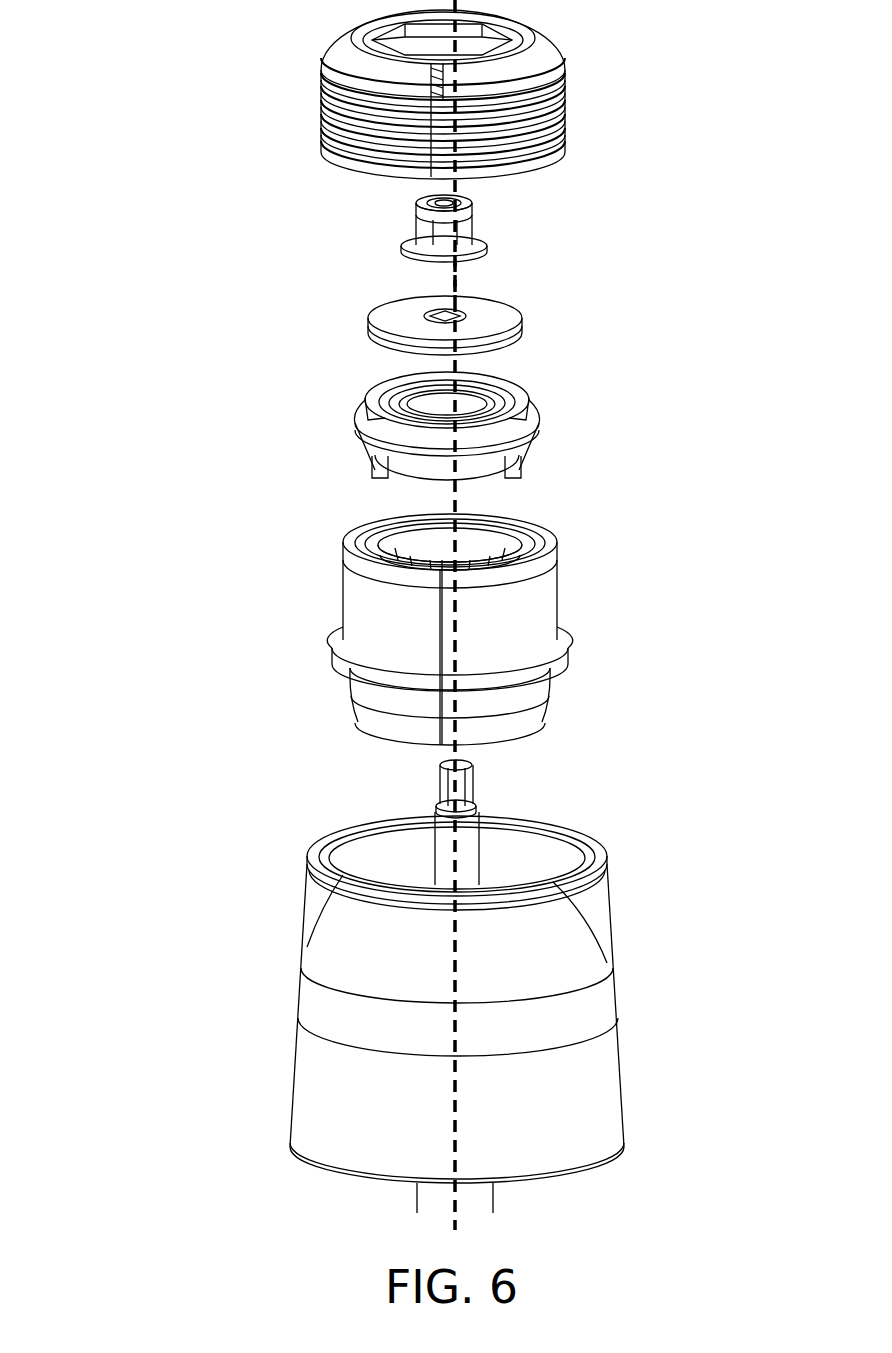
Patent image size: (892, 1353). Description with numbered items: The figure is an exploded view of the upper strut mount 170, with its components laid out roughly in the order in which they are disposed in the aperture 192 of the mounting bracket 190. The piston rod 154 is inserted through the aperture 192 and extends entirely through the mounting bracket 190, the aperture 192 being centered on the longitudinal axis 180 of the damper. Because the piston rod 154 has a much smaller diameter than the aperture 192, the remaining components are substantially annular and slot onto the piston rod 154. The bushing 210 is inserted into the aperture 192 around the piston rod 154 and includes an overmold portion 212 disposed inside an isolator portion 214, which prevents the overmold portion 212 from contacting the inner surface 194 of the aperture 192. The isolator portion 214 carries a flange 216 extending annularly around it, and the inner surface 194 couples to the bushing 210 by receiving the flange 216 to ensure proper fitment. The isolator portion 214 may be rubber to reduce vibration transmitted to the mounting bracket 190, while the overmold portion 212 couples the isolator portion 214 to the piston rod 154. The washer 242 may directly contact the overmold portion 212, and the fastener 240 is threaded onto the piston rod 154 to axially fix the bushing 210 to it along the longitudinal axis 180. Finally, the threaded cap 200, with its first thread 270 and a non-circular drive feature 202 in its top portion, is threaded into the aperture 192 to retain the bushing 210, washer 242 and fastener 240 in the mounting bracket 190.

The upper strut mount 170 is at (168, 158).
The threaded cap 200 is at (467, 93).
The non-circular drive feature 202 is at (400, 37).
The first thread 270 is at (558, 135).
The fastener 240 is at (425, 240).
The longitudinal axis 180 is at (457, 268).
The bushing 210 is at (563, 520).
The washer 242 is at (497, 322).
The overmold portion 212 is at (518, 420).
The isolator portion 214 is at (502, 629).
The flange 216 is at (562, 668).
The piston rod 154 is at (468, 835).
The mounting bracket 190 is at (508, 983).
The aperture 192 is at (386, 858).
The inner surface 194 is at (527, 860).